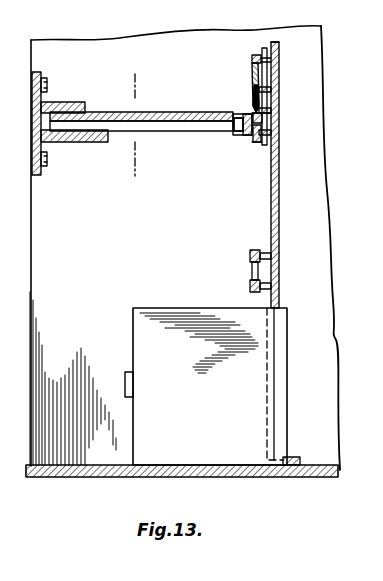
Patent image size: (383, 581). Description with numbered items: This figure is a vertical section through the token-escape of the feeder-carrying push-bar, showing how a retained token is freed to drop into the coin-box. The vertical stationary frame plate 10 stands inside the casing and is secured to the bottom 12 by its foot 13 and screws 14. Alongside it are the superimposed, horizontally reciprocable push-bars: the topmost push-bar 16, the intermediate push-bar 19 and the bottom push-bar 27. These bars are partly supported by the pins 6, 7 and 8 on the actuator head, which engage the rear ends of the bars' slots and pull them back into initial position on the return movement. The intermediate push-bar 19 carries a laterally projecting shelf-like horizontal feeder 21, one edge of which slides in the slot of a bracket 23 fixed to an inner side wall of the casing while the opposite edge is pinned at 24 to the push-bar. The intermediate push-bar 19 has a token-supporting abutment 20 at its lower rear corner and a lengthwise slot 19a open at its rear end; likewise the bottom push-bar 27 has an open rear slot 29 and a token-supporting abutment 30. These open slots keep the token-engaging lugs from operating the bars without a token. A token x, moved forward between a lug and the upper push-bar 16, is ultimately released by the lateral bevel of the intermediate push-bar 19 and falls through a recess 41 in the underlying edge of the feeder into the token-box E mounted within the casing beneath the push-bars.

The pins 6 is at (278, 48).
The pins 7 is at (280, 109).
The pins 8 is at (276, 257).
The frame plate 10 is at (279, 212).
The bottom 12 is at (324, 463).
The foot 13 is at (292, 457).
The screws 14 is at (284, 459).
The topmost push-bar 16 is at (252, 71).
The intermediate push-bar 19 is at (280, 118).
The slot 19a is at (259, 128).
The token-supporting abutment 20 is at (281, 97).
The feeder 21 is at (156, 110).
The bracket 23 is at (85, 106).
The pins 24 is at (243, 127).
The bottom push-bar 27 is at (252, 253).
The slot 29 is at (252, 273).
The token-supporting abutment 30 is at (252, 292).
The recess 41 is at (240, 123).
The token x is at (255, 89).
The token-box E is at (206, 386).